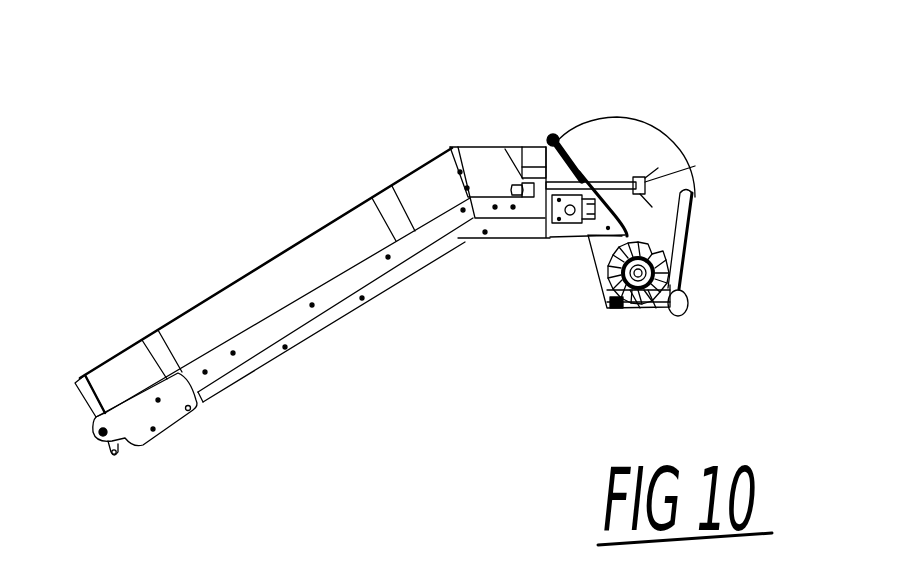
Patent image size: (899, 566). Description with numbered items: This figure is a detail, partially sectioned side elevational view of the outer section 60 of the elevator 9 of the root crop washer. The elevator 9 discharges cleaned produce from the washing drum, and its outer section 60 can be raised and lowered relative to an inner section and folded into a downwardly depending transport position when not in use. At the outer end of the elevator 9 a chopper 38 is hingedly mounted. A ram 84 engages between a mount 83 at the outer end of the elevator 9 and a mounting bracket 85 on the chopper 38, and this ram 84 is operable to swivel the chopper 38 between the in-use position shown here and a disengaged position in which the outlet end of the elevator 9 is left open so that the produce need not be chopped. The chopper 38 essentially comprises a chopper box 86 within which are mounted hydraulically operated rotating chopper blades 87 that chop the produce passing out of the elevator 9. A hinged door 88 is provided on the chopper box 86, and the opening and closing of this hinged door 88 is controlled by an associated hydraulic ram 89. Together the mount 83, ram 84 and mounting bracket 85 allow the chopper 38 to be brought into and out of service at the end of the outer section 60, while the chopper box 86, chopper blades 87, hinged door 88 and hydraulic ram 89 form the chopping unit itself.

The elevator 9 is at (358, 182).
The outer section 60 is at (467, 135).
The mount 83 is at (525, 196).
The ram 84 is at (590, 160).
The mounting bracket 85 is at (642, 177).
The chopper 38 is at (678, 137).
The chopper box 86 is at (700, 164).
The chopper blades 87 is at (604, 270).
The hinged door 88 is at (687, 253).
The hydraulic ram 89 is at (640, 295).